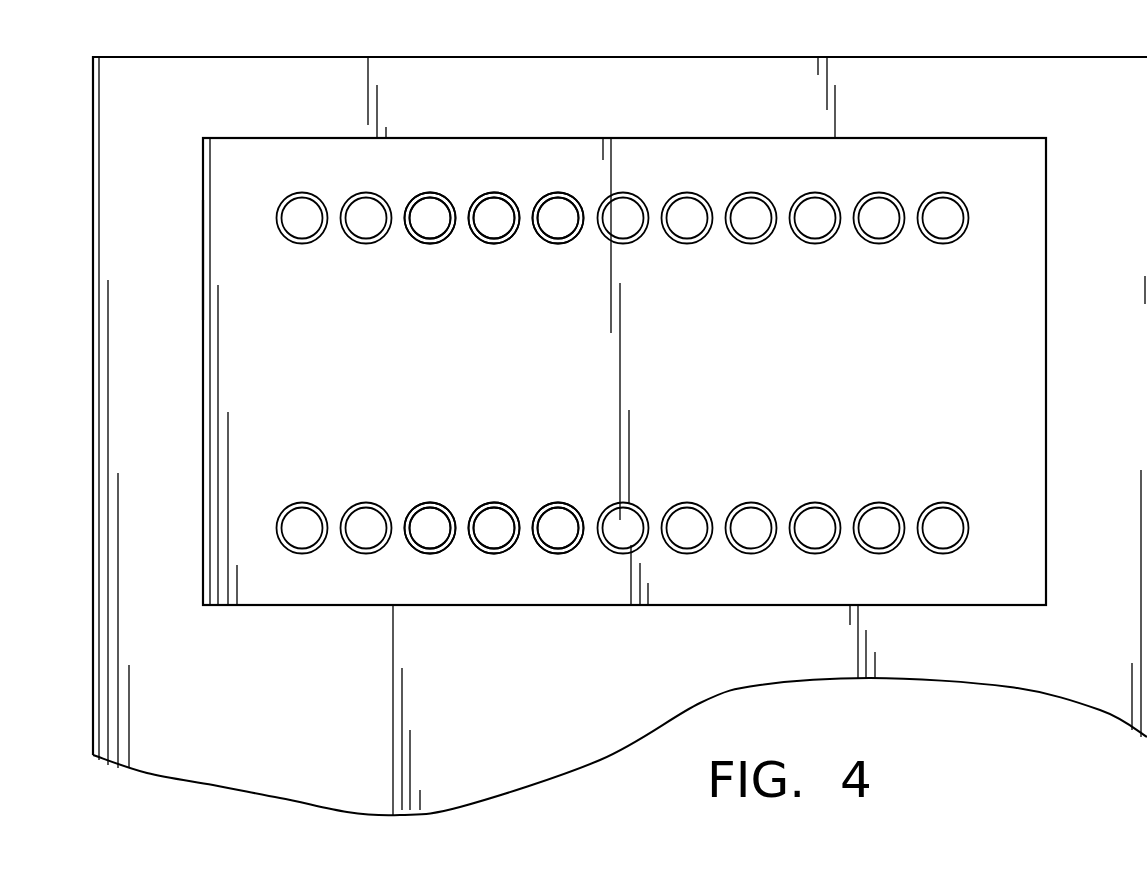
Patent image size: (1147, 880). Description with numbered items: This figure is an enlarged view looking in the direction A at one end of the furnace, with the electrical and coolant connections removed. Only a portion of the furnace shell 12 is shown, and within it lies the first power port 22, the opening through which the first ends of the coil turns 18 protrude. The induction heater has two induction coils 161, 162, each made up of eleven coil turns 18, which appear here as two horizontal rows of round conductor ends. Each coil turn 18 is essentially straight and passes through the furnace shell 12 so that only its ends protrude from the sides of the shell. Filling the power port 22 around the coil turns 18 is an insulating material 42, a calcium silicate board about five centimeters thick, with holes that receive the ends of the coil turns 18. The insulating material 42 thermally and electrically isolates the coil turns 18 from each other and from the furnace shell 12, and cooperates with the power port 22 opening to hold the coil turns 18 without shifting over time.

The viewing direction A is at (978, 717).
The furnace shell 12 is at (638, 115).
The first power port 22 is at (446, 137).
The insulating material 42 is at (232, 255).
The first induction coil 161 is at (982, 220).
The second induction coil 162 is at (982, 530).
The coil turns 18 is at (442, 244).